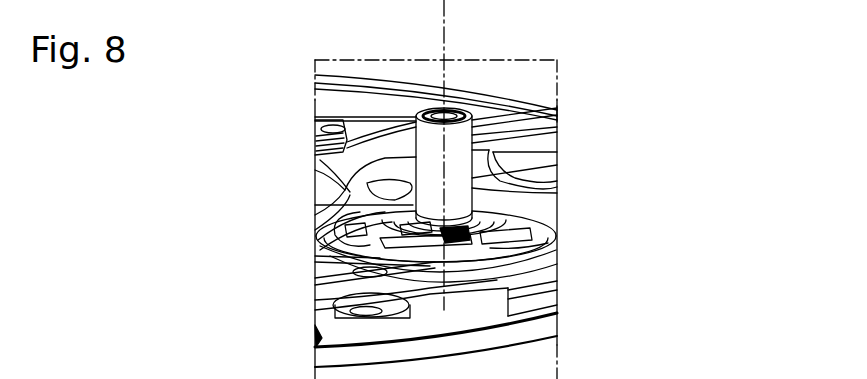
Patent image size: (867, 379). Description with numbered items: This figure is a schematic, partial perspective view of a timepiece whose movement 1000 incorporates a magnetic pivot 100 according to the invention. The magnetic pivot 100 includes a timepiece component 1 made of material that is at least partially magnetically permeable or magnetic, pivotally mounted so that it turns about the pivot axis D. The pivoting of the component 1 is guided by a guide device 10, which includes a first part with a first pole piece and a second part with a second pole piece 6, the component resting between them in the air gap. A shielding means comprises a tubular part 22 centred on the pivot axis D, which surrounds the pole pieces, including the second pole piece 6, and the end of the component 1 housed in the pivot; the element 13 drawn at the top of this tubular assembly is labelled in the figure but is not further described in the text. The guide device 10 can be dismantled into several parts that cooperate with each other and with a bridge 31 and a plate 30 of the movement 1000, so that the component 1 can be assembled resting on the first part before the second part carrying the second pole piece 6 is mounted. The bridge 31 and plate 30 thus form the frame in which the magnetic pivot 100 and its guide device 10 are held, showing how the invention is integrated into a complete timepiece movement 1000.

The timepiece component 1 is at (333, 300).
The second pole piece 6 is at (447, 113).
The guide device 10 is at (478, 146).
The pillar 13 is at (463, 111).
The tubular part 22 is at (476, 128).
The plate 30 is at (552, 274).
The bridge 31 is at (548, 200).
The magnetic pivot 100 is at (550, 93).
The timepiece movement 1000 is at (678, 84).
The pivot axis D is at (440, 36).